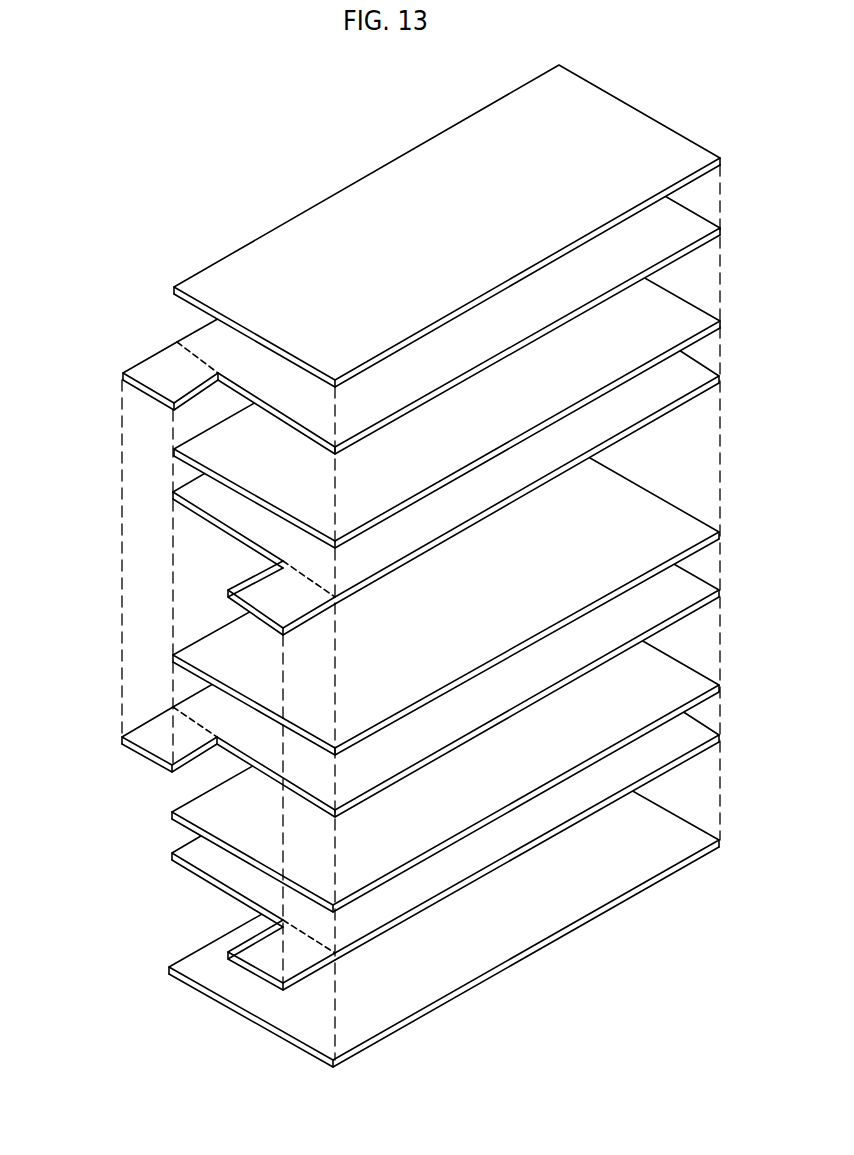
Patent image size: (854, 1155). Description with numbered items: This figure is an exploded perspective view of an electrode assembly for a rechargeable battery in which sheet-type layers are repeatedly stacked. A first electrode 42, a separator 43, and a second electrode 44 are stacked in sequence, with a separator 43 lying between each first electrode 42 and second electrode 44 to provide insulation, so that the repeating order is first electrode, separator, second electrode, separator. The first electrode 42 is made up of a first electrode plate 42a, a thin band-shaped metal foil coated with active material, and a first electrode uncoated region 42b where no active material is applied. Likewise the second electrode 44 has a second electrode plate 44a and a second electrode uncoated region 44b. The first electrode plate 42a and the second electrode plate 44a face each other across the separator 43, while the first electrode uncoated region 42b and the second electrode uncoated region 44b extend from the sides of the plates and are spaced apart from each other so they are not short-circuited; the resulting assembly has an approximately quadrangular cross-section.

The first electrode 42 is at (371, 452).
The first electrode plate 42a is at (235, 503).
The first electrode uncoated region 42b is at (272, 592).
The separator 43 is at (243, 273).
The second electrode 44 is at (371, 292).
The second electrode plate 44a is at (313, 400).
The second electrode uncoated region 44b is at (185, 372).